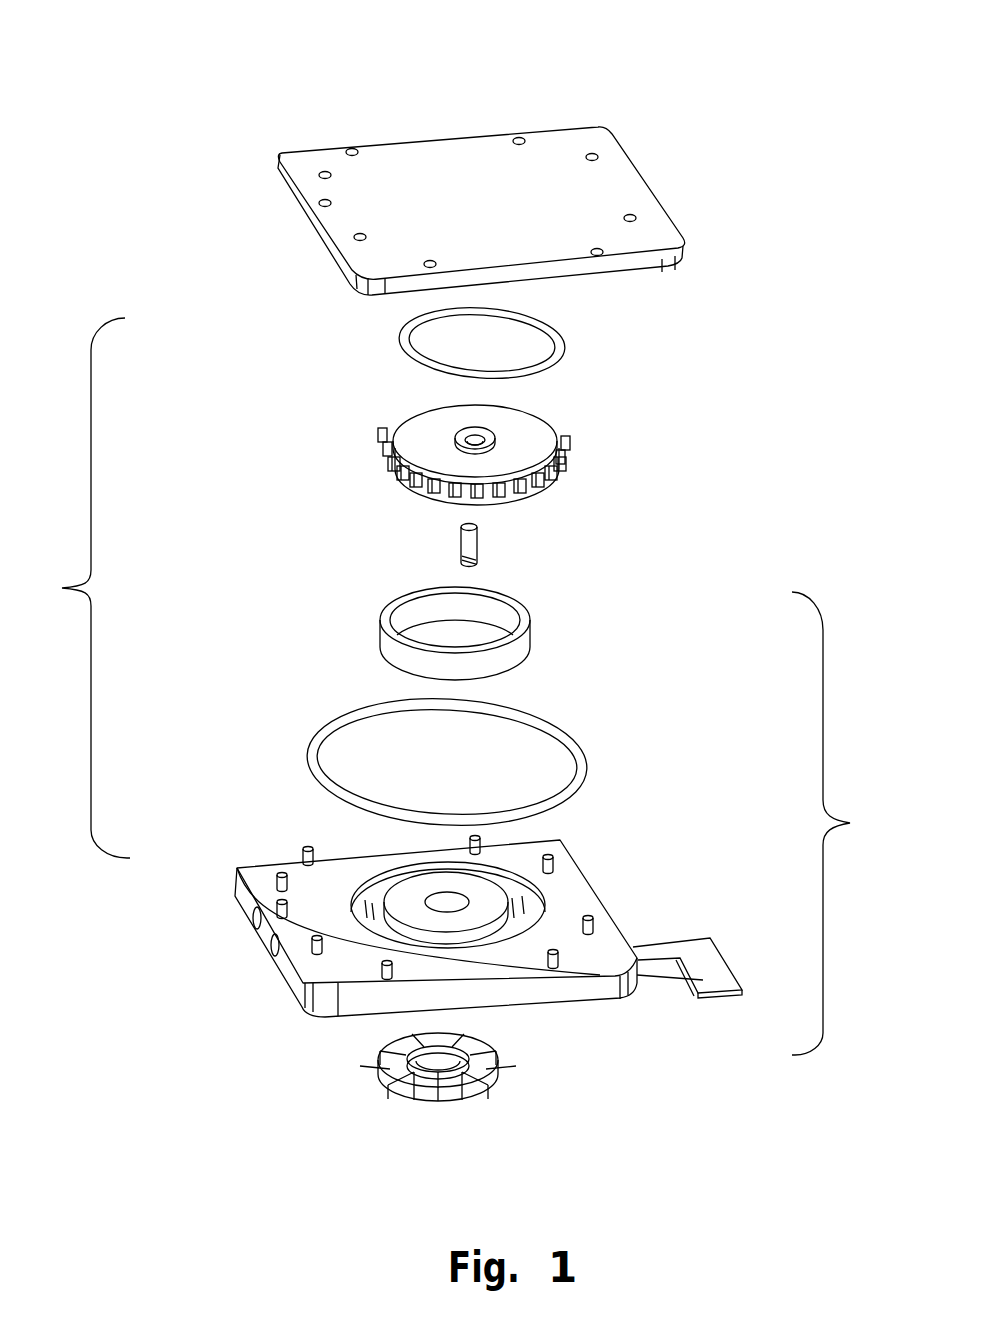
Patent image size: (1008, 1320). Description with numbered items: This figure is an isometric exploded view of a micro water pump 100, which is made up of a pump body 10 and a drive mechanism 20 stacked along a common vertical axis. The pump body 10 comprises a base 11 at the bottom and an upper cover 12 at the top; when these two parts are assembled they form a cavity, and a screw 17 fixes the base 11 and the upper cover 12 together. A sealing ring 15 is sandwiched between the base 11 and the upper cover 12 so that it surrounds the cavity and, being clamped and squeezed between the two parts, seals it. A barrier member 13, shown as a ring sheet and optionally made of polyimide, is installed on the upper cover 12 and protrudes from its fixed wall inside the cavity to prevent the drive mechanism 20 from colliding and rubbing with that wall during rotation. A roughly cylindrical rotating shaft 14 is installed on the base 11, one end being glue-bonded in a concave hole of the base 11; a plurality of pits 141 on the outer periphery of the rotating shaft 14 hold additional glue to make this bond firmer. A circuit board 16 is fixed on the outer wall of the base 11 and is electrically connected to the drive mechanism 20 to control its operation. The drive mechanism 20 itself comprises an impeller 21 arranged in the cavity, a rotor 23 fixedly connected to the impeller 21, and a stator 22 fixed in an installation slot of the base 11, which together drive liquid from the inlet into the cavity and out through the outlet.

The micro water pump 100 is at (505, 27).
The pump body 10 is at (81, 588).
The base 11 is at (439, 858).
The upper cover 12 is at (338, 232).
The barrier member 13 is at (410, 362).
The rotating shaft 14 is at (468, 548).
The pits 141 is at (460, 562).
The sealing ring 15 is at (325, 733).
The circuit board 16 is at (245, 910).
The screw 17 is at (307, 850).
The drive mechanism 20 is at (843, 823).
The impeller 21 is at (525, 457).
The stator 22 is at (498, 1070).
The rotor 23 is at (503, 657).